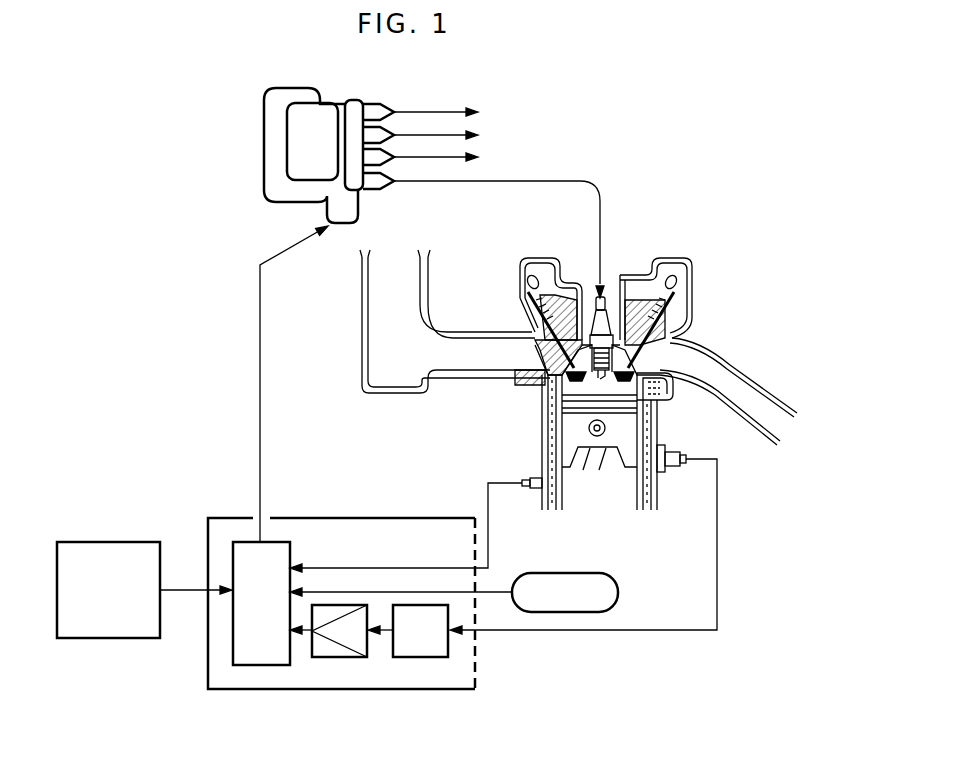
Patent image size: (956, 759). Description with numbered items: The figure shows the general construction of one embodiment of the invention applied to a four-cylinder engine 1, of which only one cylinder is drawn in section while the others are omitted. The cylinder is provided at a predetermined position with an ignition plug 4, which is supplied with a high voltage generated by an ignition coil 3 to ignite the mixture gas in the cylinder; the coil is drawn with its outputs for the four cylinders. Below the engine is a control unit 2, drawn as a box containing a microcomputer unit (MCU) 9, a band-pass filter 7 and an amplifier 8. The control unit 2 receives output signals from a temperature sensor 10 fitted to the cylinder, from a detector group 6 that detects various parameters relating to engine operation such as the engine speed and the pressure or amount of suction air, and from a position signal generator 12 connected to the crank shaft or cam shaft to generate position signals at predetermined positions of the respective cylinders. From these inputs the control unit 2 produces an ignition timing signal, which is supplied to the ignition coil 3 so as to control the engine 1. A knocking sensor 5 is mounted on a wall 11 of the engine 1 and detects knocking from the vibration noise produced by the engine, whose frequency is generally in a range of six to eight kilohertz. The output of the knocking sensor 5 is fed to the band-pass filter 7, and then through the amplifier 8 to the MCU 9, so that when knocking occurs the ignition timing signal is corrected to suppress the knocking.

The engine 1 is at (677, 257).
The control unit 2 is at (222, 527).
The ignition coil 3 is at (298, 142).
The ignition plug 4 is at (611, 285).
The knocking sensor 5 is at (667, 468).
The detector group 6 is at (618, 593).
The band-pass filter 7 is at (417, 657).
The amplifier 8 is at (330, 657).
The microcomputer unit 9 is at (243, 612).
The temperature sensor 10 is at (530, 481).
The wall 11 is at (657, 492).
The position signal generator 12 is at (126, 540).